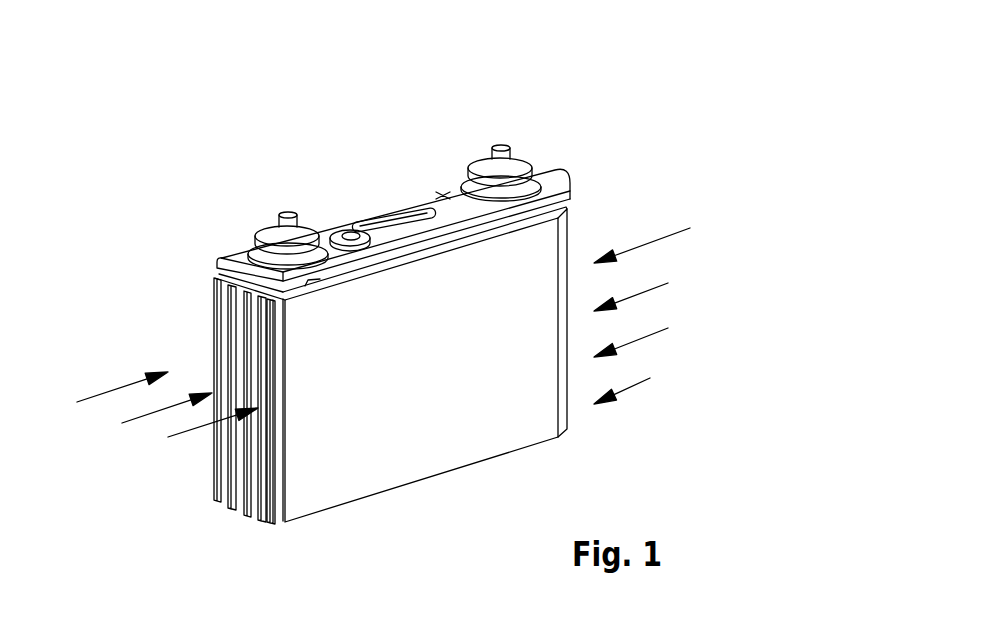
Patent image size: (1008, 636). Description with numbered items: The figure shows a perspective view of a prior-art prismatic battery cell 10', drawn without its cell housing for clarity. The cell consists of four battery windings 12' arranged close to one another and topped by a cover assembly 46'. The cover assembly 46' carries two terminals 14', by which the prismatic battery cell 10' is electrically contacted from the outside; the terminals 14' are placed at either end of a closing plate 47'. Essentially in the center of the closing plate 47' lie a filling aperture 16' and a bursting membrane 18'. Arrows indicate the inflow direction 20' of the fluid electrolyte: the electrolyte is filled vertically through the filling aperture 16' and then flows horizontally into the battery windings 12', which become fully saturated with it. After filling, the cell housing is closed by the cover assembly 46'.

The prismatic battery cell 10' is at (611, 43).
The battery windings 12' is at (350, 384).
The terminals 14' is at (370, 178).
The filling aperture 16' is at (393, 218).
The bursting membrane 18' is at (348, 189).
The inflow direction 20' is at (371, 322).
The cover assembly 46' is at (637, 129).
The closing plate 47' is at (401, 178).